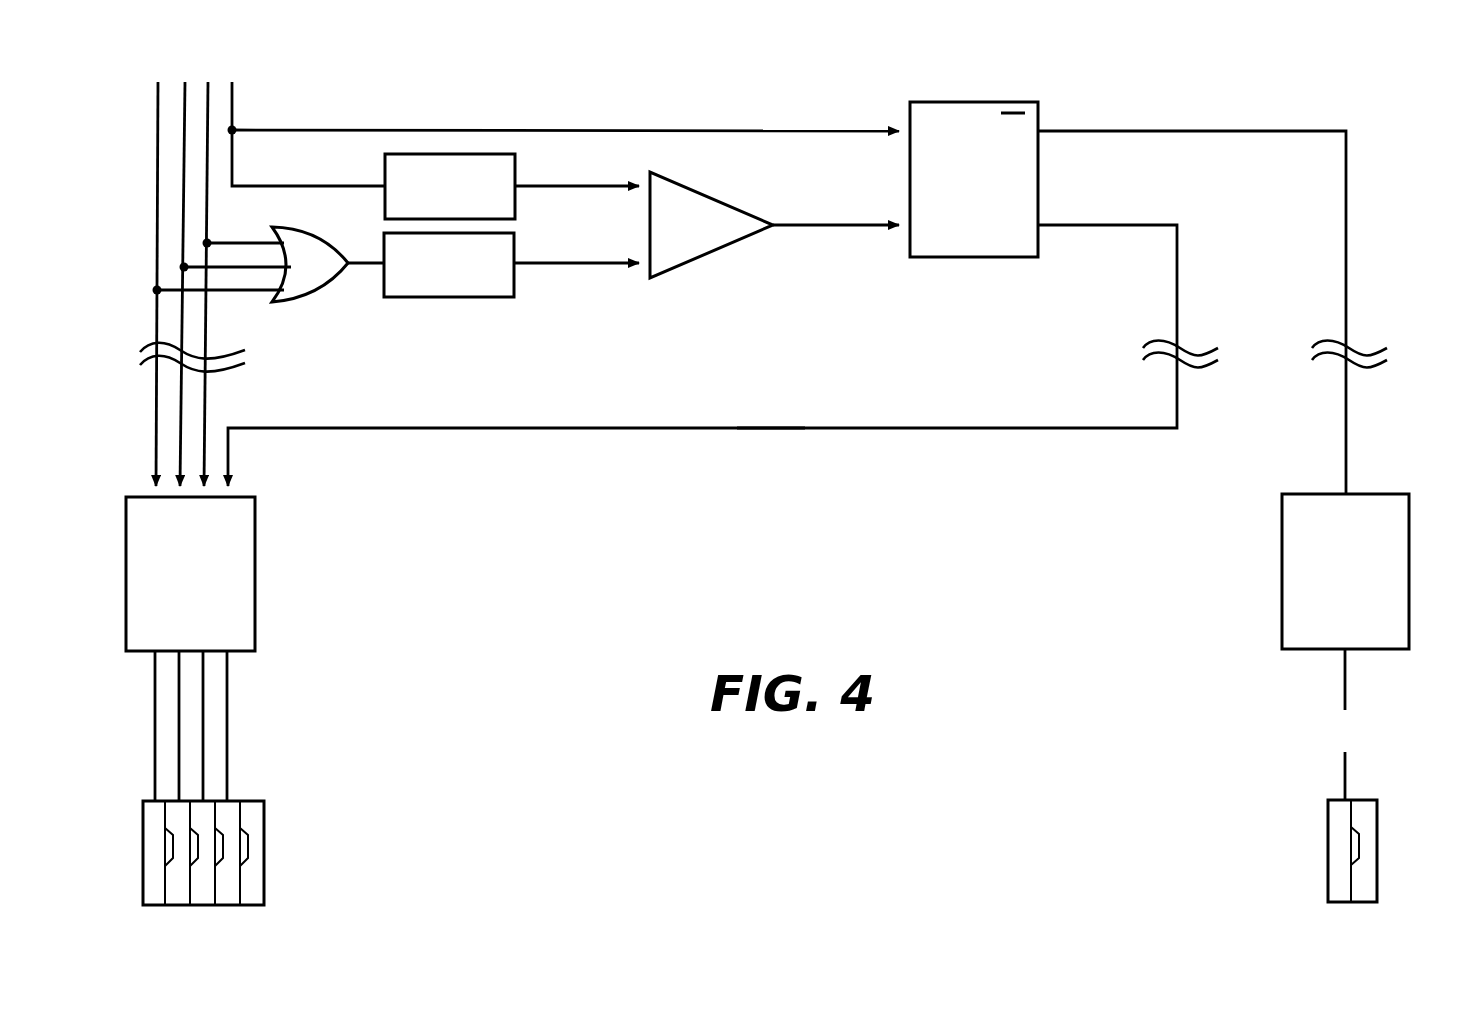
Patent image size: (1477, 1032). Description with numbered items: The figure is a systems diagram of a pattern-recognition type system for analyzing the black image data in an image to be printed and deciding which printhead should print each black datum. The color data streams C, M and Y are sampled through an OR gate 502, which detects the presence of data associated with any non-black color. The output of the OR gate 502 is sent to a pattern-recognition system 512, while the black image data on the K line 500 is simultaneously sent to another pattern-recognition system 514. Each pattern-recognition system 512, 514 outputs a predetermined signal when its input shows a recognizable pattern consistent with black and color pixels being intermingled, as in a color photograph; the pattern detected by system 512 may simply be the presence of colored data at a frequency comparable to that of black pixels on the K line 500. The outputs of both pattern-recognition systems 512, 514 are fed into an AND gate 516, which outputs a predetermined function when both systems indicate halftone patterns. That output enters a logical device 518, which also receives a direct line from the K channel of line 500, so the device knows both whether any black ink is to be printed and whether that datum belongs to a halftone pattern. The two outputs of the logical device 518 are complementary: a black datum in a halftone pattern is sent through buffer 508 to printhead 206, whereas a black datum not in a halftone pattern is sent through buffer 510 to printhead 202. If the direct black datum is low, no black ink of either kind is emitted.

The K line 500 is at (138, 199).
The OR gate 502 is at (325, 287).
The pattern-recognition system 512 is at (450, 297).
The pattern-recognition system 514 is at (450, 154).
The AND gate 516 is at (715, 250).
The logical device 518 is at (976, 102).
The buffer 508 is at (255, 573).
The buffer 510 is at (1409, 570).
The printhead 206 is at (264, 852).
The printhead 202 is at (1377, 852).